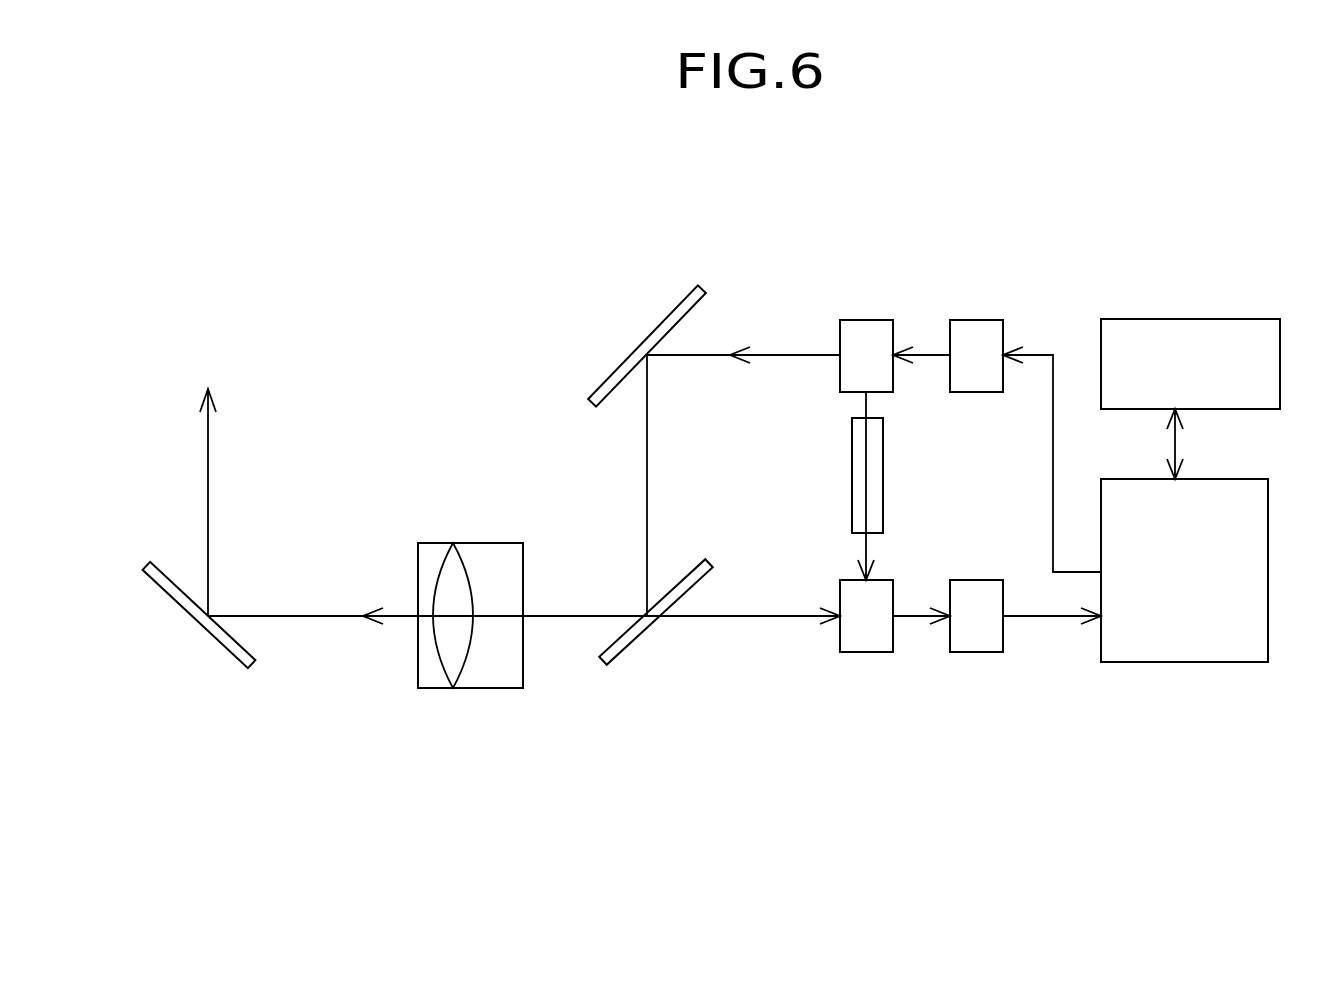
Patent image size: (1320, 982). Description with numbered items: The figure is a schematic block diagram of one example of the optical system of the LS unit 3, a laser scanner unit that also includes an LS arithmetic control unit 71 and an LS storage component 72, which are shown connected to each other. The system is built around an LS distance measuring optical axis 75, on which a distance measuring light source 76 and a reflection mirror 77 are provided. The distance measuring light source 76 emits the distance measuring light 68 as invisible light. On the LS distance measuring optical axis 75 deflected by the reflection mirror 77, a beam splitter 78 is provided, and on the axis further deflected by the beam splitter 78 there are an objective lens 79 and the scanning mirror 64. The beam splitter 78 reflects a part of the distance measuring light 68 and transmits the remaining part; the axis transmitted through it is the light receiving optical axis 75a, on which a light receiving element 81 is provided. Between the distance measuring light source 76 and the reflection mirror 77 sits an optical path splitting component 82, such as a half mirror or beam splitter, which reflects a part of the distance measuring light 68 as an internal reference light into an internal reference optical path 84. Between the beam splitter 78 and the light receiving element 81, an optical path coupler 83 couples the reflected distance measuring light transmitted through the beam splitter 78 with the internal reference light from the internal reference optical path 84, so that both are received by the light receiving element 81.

The LS unit 3 is at (700, 440).
The scanning mirror 64 is at (187, 629).
The distance measuring light 68 is at (365, 577).
The LS arithmetic control unit 71 is at (1184, 613).
The LS storage component 72 is at (1190, 353).
The LS distance measuring optical axis 75 is at (520, 430).
The light receiving optical axis 75a is at (778, 571).
The distance measuring light source 76 is at (1025, 402).
The reflection mirror 77 is at (647, 314).
The beam splitter 78 is at (655, 655).
The objective lens 79 is at (470, 561).
The light receiving element 81 is at (1025, 648).
The optical path splitting component 82 is at (895, 393).
The optical path coupler 83 is at (895, 656).
The internal reference optical path 84 is at (906, 475).